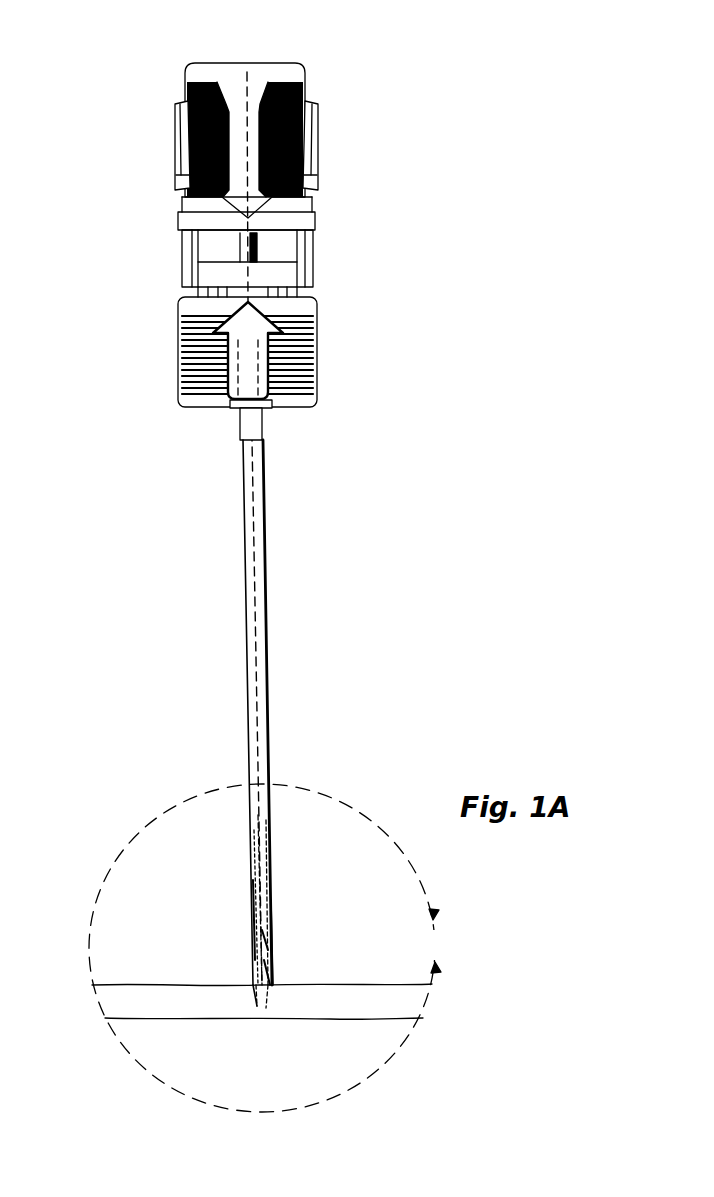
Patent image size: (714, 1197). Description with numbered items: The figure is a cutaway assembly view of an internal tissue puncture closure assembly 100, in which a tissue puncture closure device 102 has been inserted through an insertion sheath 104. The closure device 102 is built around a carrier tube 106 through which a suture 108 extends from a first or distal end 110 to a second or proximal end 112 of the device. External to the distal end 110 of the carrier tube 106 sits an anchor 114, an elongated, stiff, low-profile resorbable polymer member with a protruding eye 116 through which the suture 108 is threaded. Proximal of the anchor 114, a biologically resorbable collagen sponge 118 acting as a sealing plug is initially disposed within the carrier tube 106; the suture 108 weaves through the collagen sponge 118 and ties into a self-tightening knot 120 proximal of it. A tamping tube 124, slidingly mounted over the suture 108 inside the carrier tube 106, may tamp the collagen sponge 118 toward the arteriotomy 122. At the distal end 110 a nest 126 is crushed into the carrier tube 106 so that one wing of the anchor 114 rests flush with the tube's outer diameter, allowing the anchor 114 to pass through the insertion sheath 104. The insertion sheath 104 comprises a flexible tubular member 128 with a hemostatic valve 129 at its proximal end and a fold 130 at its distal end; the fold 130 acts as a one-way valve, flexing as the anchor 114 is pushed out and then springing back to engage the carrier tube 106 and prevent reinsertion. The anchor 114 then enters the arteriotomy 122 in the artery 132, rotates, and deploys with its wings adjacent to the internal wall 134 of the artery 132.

The internal tissue puncture closure assembly 100 is at (392, 297).
The tissue puncture closure device 102 is at (313, 199).
The insertion sheath 104 is at (315, 358).
The carrier tube 106 is at (272, 848).
The suture 108 is at (245, 86).
The distal end 110 is at (345, 1037).
The proximal end 112 is at (183, 97).
The anchor 114 is at (272, 965).
The protruding eye 116 is at (254, 987).
The collagen sponge 118 is at (272, 910).
The self-tightening knot 120 is at (254, 902).
The arteriotomy 122 is at (255, 987).
The tamping tube 124 is at (270, 873).
The nest 126 is at (272, 947).
The tubular member 128 is at (268, 719).
The hemostatic valve 129 is at (265, 307).
The fold 130 is at (268, 1000).
The artery 132 is at (421, 1017).
The internal wall 134 is at (171, 996).